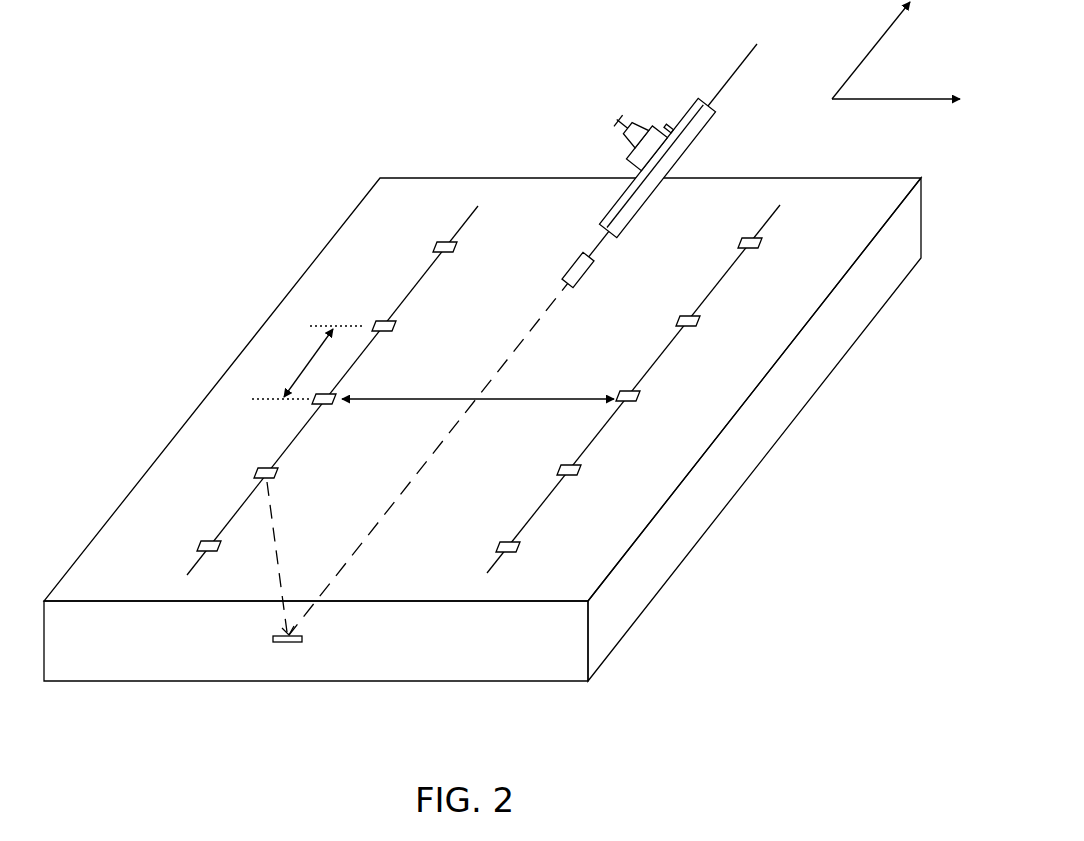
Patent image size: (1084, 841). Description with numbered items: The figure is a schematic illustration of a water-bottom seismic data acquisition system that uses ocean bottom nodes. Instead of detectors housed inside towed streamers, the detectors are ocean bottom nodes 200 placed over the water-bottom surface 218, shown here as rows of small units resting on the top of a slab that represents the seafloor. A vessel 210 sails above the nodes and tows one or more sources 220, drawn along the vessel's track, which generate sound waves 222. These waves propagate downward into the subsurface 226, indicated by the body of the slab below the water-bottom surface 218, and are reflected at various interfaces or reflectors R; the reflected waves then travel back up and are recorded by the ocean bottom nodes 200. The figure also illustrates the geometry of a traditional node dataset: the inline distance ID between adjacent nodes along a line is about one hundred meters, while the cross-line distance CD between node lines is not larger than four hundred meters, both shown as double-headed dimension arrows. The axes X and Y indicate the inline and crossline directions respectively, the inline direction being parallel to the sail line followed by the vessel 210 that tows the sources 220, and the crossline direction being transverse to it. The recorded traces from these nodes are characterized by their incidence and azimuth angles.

The ocean bottom nodes 200 is at (702, 322).
The vessel 210 is at (733, 72).
The water-bottom surface 218 is at (596, 542).
The sources 220 is at (590, 272).
The sound waves 222 is at (708, 122).
The subsurface 226 is at (391, 664).
The reflectors R is at (288, 645).
The inline distance ID is at (308, 365).
The cross-line distance CD is at (457, 397).
The inline direction axis X is at (868, 49).
The crossline direction axis Y is at (895, 103).